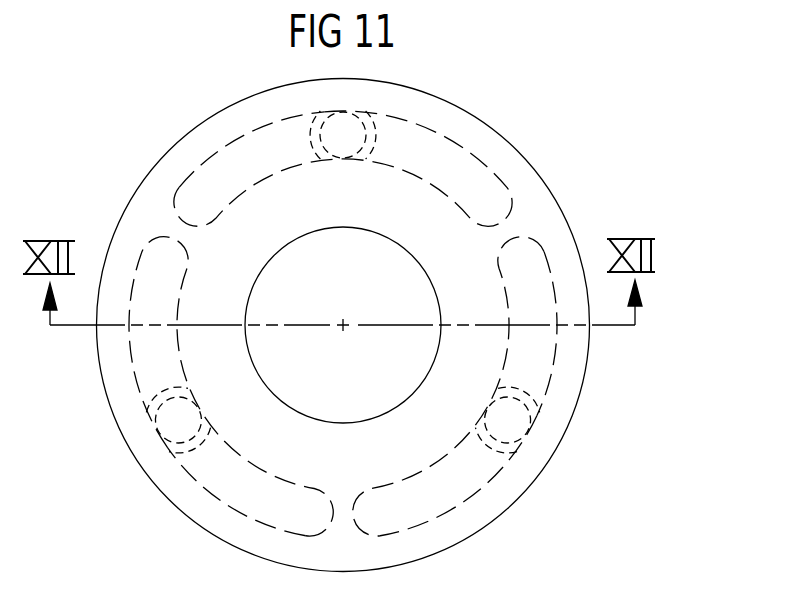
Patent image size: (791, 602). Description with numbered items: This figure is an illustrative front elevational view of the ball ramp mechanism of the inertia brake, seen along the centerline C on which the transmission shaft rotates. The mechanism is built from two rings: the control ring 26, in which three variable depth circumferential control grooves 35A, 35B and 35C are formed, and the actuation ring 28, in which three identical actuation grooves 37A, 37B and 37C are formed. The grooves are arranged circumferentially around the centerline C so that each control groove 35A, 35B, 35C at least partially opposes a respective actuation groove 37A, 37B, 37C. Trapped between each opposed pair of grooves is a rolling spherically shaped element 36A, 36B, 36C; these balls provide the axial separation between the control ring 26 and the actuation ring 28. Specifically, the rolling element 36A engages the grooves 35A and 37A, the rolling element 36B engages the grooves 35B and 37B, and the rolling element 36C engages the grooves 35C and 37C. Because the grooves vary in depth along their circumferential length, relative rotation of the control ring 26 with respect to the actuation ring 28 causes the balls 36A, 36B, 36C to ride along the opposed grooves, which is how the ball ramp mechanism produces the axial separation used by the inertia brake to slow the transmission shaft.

The control ring 26 is at (561, 204).
The actuation ring 28 is at (534, 163).
The centerline C is at (347, 318).
The control groove 35A is at (469, 162).
The control groove 35B is at (505, 491).
The control groove 35C is at (141, 353).
The rolling spherically shaped element 36A is at (369, 124).
The rolling spherically shaped element 36B is at (526, 426).
The rolling spherically shaped element 36C is at (166, 436).
The actuation groove 37A is at (268, 134).
The actuation groove 37B is at (543, 253).
The actuation groove 37C is at (230, 496).